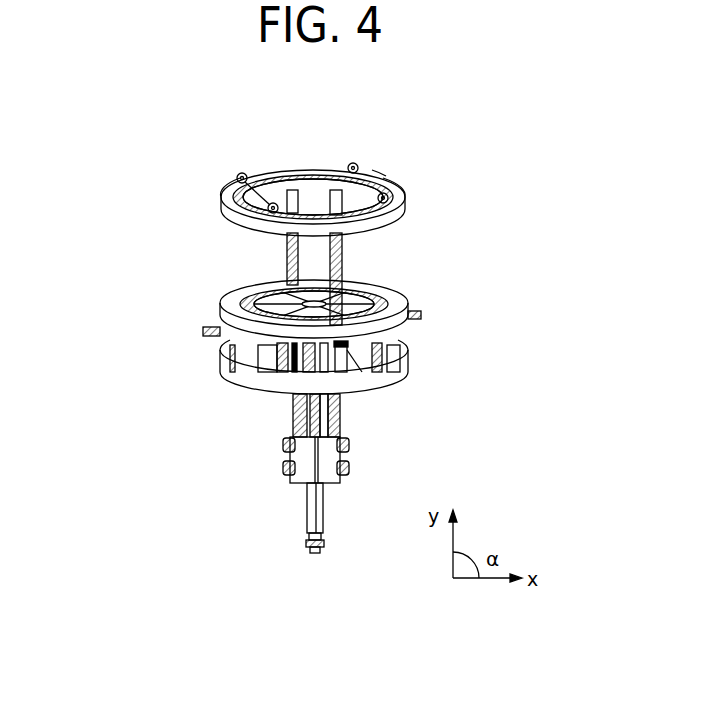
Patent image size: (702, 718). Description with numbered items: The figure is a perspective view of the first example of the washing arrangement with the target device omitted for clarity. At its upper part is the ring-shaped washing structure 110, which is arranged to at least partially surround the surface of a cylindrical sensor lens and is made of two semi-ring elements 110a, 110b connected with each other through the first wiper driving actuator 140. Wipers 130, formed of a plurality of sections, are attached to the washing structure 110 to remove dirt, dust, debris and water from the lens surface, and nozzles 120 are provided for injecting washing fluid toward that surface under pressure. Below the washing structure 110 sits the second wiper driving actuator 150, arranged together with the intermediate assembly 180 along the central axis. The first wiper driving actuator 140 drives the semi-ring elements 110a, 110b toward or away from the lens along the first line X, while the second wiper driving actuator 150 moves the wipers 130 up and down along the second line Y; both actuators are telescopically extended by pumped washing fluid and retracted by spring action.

The washing structure 110 is at (412, 200).
The semi-ring element 110a is at (223, 202).
The semi-ring element 110b is at (392, 188).
The nozzles 120 is at (379, 196).
The wipers 130 is at (377, 172).
The first wiper driving actuator 140 is at (252, 223).
The second wiper driving actuator 150 is at (312, 513).
The sensor housing assembly 180 is at (422, 337).